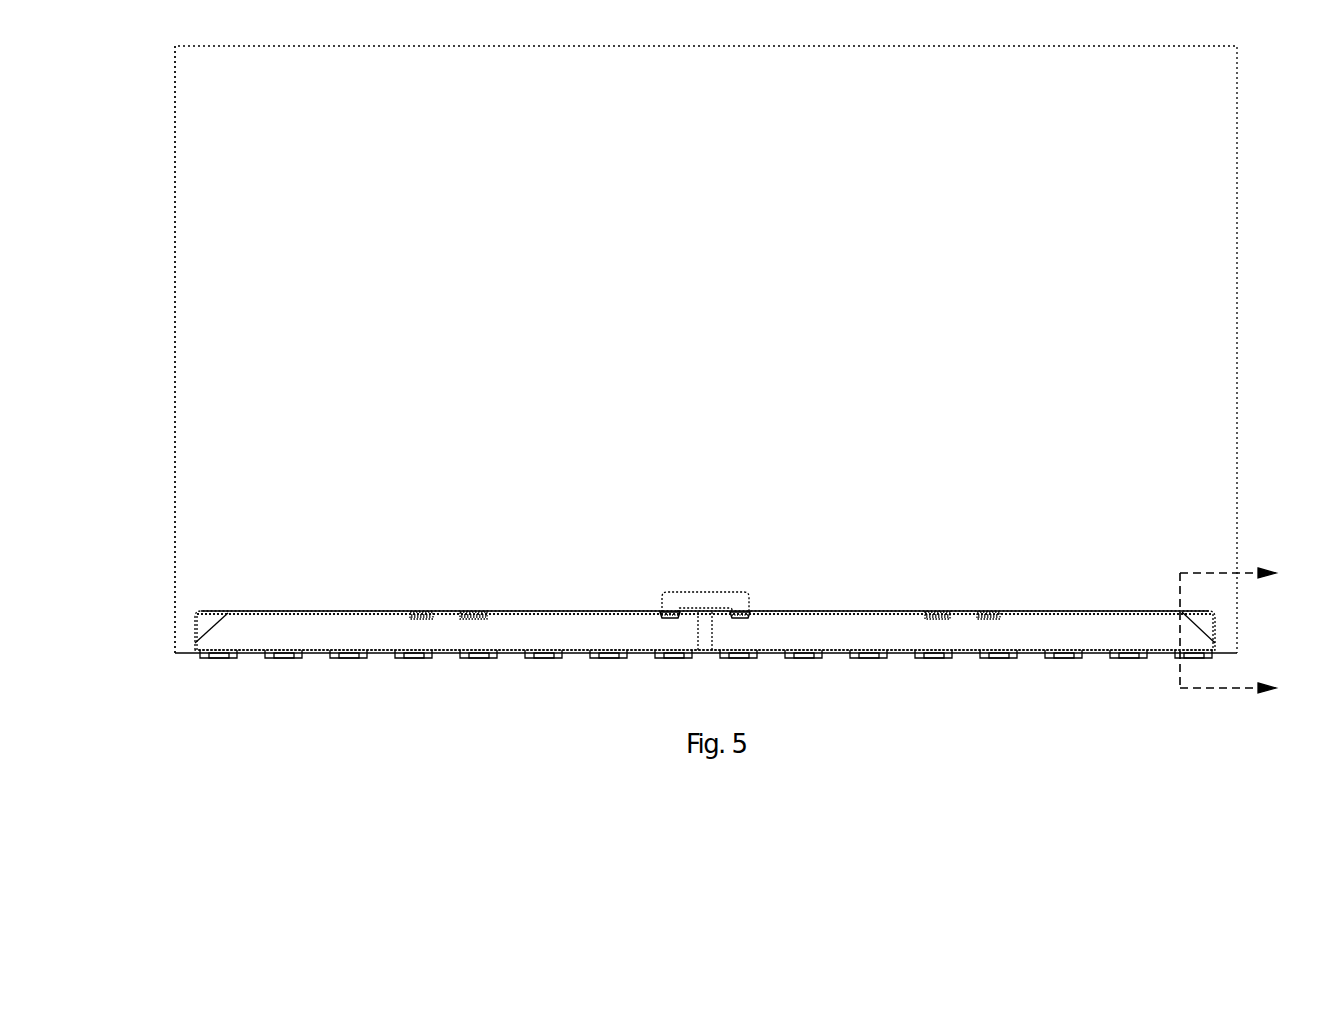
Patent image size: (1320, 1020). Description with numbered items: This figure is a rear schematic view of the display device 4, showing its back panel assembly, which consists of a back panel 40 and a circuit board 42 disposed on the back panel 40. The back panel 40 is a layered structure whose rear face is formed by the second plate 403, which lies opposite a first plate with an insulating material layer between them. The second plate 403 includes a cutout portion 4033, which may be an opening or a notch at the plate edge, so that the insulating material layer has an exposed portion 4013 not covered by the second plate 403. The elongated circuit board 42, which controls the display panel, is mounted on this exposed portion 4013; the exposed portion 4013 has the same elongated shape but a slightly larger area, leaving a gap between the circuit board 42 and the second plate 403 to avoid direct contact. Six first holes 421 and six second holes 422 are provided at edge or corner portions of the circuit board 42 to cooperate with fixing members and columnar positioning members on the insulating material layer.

The display device 4 is at (190, 97).
The back panel 40 is at (1168, 113).
The second plate 403 is at (200, 358).
The exposed portion 4013 is at (205, 625).
The cutout portion 4033 is at (200, 634).
The circuit board 42 is at (858, 637).
The first holes 421 is at (232, 616).
The second holes 422 is at (255, 638).